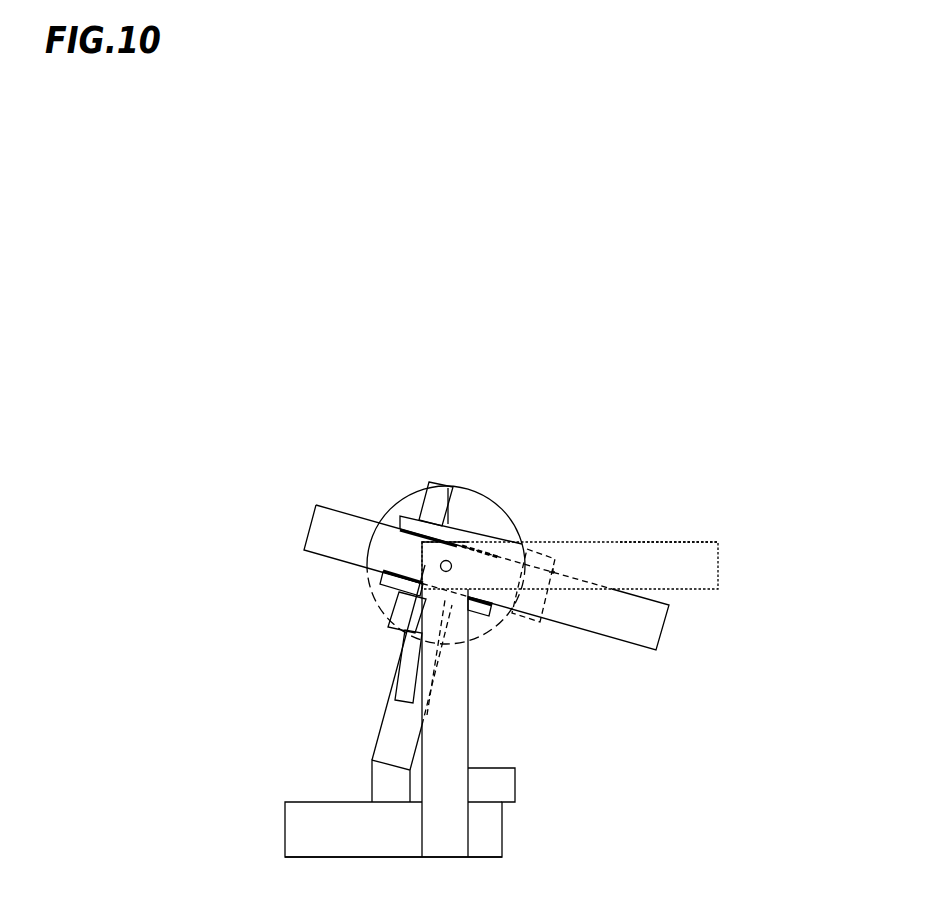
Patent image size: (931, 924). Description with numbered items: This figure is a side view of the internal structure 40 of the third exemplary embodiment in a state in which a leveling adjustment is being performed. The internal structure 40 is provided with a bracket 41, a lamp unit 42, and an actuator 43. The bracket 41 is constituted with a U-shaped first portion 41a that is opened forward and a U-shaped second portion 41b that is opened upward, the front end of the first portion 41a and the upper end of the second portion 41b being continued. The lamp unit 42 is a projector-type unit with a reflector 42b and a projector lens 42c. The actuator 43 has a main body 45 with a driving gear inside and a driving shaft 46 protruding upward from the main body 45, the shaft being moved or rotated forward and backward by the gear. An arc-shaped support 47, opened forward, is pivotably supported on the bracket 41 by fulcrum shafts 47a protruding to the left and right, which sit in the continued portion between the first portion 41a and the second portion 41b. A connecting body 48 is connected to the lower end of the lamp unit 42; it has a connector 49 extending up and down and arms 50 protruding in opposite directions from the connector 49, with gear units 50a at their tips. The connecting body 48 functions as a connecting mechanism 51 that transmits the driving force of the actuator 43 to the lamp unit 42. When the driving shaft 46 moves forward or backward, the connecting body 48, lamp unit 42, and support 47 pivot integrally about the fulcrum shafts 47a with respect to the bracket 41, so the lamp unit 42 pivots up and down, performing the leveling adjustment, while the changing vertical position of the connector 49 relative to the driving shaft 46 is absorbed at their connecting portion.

The internal structure 40 is at (200, 460).
The bracket 41 is at (668, 543).
The first portion 41a is at (700, 543).
The second portion 41b is at (462, 718).
The lamp unit 42 is at (480, 515).
The reflector 42b is at (510, 524).
The projector lens 42c is at (390, 506).
The actuator 43 is at (290, 812).
The main body 45 is at (297, 832).
The driving shaft 46 is at (371, 782).
The support 47 is at (660, 623).
The fulcrum shaft 47a is at (452, 566).
The connecting body 48 is at (383, 718).
The connecting mechanism 51 is at (408, 666).
The connector 49 is at (385, 740).
The arm 50 is at (412, 503).
The gear unit 50a is at (453, 523).